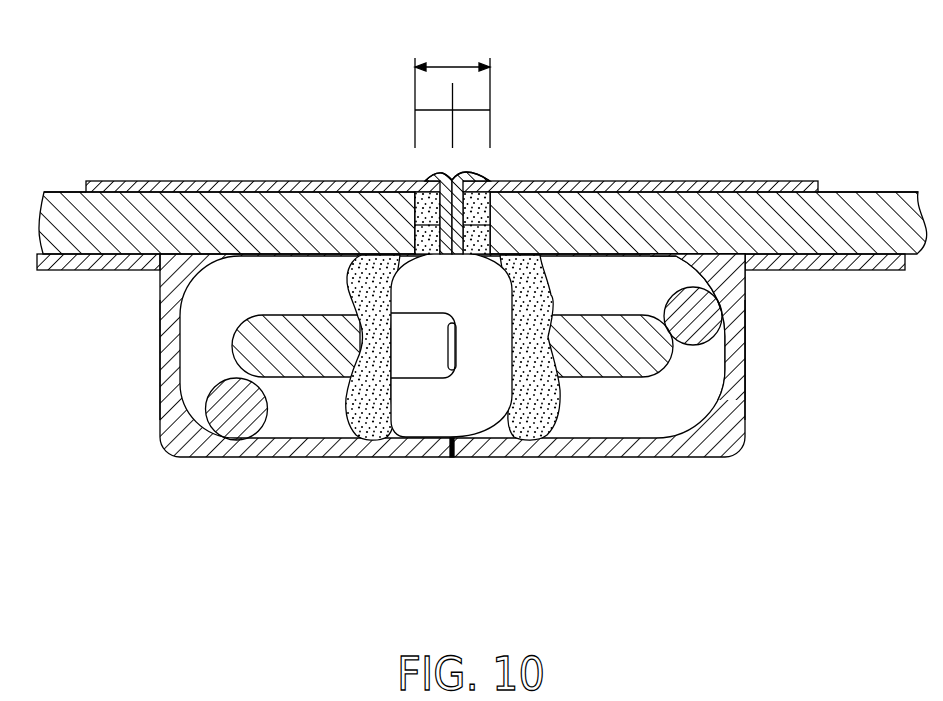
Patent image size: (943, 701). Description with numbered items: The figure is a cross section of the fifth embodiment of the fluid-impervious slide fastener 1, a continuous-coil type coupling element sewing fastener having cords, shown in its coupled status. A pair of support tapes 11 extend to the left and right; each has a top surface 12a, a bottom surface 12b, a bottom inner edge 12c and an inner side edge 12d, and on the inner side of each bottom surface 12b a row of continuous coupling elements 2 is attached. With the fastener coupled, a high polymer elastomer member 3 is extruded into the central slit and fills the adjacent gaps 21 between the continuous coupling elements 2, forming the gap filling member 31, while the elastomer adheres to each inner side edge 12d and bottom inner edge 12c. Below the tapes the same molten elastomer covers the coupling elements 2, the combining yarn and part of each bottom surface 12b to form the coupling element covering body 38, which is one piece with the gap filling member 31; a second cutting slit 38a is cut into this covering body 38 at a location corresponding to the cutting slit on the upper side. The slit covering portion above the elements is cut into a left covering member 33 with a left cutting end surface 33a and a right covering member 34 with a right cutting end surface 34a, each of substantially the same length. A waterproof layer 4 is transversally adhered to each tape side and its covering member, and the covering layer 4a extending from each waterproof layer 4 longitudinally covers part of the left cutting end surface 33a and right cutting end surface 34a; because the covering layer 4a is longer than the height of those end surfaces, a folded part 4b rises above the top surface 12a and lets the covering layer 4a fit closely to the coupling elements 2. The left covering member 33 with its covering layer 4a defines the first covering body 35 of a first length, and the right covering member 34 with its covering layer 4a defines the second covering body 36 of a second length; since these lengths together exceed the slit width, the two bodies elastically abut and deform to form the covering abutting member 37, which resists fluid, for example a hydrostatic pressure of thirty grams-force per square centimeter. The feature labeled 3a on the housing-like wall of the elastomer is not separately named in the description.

The slide fastener 1 is at (131, 149).
The support tapes 11 is at (82, 228).
The top surface 12a is at (70, 186).
The bottom surface 12b is at (125, 264).
The bottom inner edge 12c is at (396, 252).
The inner side edge 12d is at (413, 216).
The continuous coupling elements 2 is at (222, 410).
The adjacent gaps 21 is at (428, 407).
The high polymer elastomer member 3 is at (343, 268).
The housing side wall 3a is at (172, 376).
The gap filling member 31 is at (362, 415).
The left covering member 33 is at (440, 207).
The left cutting end surface 33a is at (428, 224).
The right covering member 34 is at (478, 222).
The right cutting end surface 34a is at (487, 232).
The first covering body 35 is at (434, 114).
The second covering body 36 is at (472, 114).
The covering abutting member 37 is at (452, 89).
The coupling element covering body 38 is at (735, 383).
The second cutting slit 38a is at (455, 452).
The waterproof layer 4 is at (200, 181).
The covering layer 4a is at (436, 190).
The folded part 4b is at (460, 168).